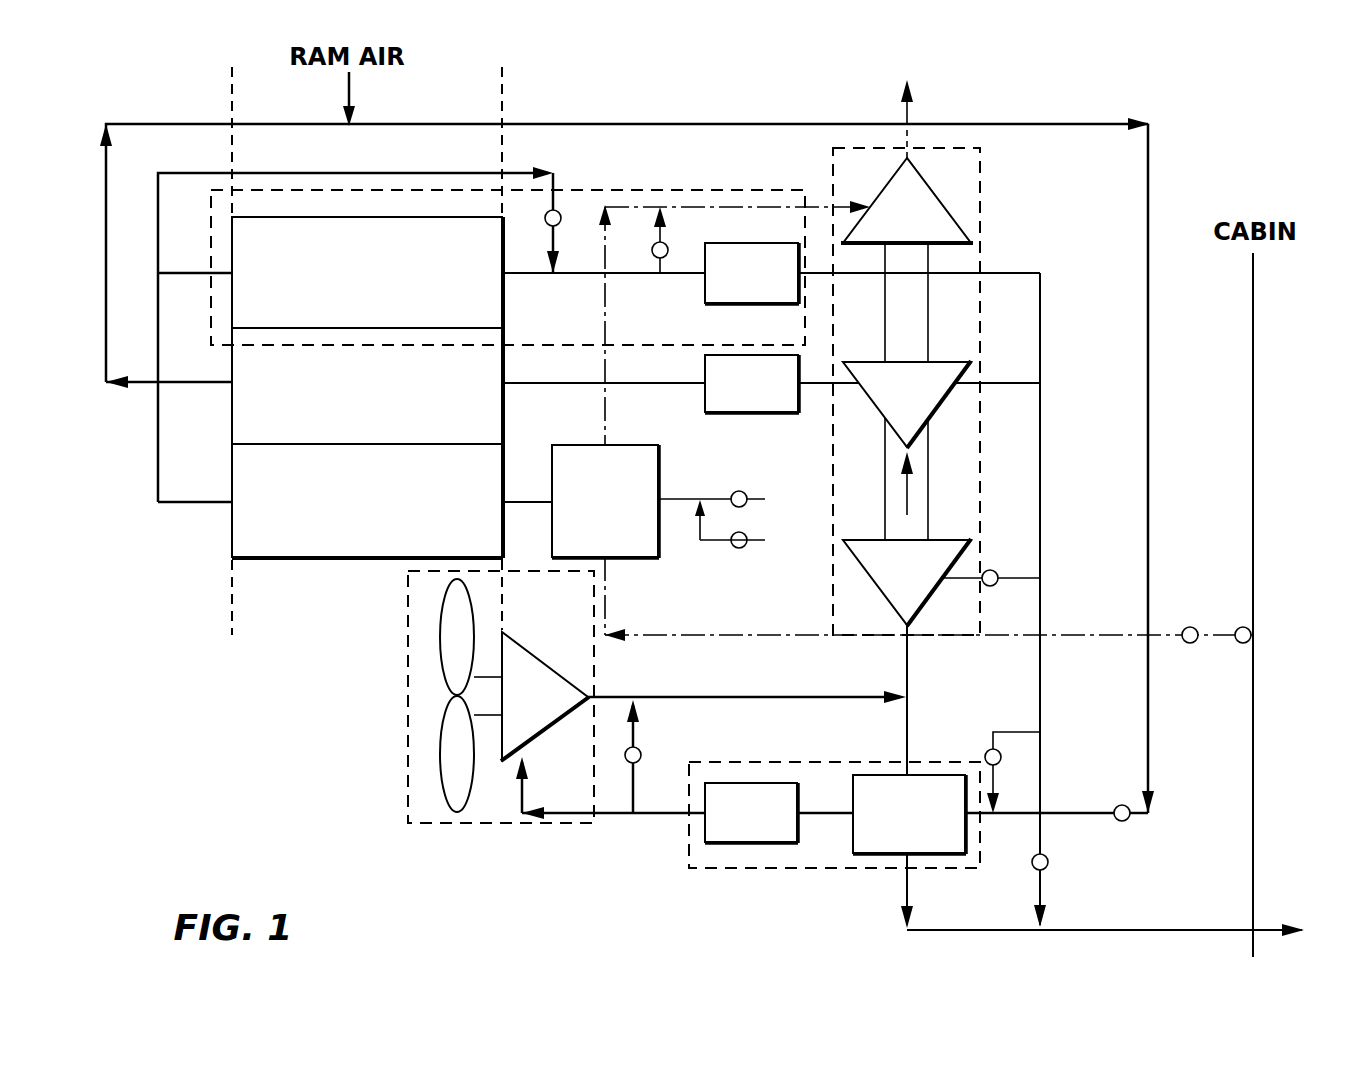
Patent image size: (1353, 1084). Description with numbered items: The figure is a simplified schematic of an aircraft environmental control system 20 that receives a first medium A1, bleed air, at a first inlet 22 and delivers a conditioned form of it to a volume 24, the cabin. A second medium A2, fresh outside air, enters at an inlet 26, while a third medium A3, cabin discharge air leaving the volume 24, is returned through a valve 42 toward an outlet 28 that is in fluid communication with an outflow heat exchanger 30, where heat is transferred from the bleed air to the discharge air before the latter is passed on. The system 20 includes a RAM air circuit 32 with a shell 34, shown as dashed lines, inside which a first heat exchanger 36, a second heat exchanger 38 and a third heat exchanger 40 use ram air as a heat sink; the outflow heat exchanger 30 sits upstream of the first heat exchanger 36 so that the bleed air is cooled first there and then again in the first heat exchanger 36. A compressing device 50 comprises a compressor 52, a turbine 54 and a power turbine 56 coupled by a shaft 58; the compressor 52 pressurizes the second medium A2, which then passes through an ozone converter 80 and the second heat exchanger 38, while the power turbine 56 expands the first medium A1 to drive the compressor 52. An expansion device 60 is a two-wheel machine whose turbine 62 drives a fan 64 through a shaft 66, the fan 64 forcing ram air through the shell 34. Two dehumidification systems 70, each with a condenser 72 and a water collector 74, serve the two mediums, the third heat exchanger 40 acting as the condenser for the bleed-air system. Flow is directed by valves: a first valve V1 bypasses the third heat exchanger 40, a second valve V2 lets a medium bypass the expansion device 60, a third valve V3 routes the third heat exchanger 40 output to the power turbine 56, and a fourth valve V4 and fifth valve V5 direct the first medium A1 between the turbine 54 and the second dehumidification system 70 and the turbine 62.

The environmental control system 20 is at (205, 762).
The first inlet 22 is at (746, 492).
The volume 24 is at (1253, 538).
The inlet 26 is at (907, 505).
The outlet 28 is at (1245, 645).
The outflow heat exchanger 30 is at (605, 501).
The RAM air circuit 32 is at (234, 134).
The shell 34 is at (502, 94).
The first heat exchanger 36 is at (367, 500).
The second heat exchanger 38 is at (367, 386).
The third heat exchanger 40 is at (367, 272).
The valve 42 is at (1190, 627).
The compressing device 50 is at (990, 135).
The compressor 52 is at (935, 395).
The turbine 54 is at (915, 600).
The power turbine 56 is at (890, 188).
The shaft 58 is at (907, 307).
The expansion device 60 is at (440, 836).
The turbine 62 is at (560, 700).
The fan 64 is at (445, 775).
The shaft 66 is at (483, 700).
The dehumidification system 70 is at (610, 182).
The condenser 72 is at (870, 840).
The water collector 74 is at (750, 243).
The ozone converter 80 is at (777, 413).
The first valve V1 is at (557, 210).
The second valve V2 is at (641, 753).
The third valve V3 is at (652, 255).
The fourth valve V4 is at (994, 571).
The fifth valve V5 is at (987, 752).
The first medium A1 is at (680, 499).
The second medium A2 is at (622, 383).
The third medium A3 is at (1058, 632).